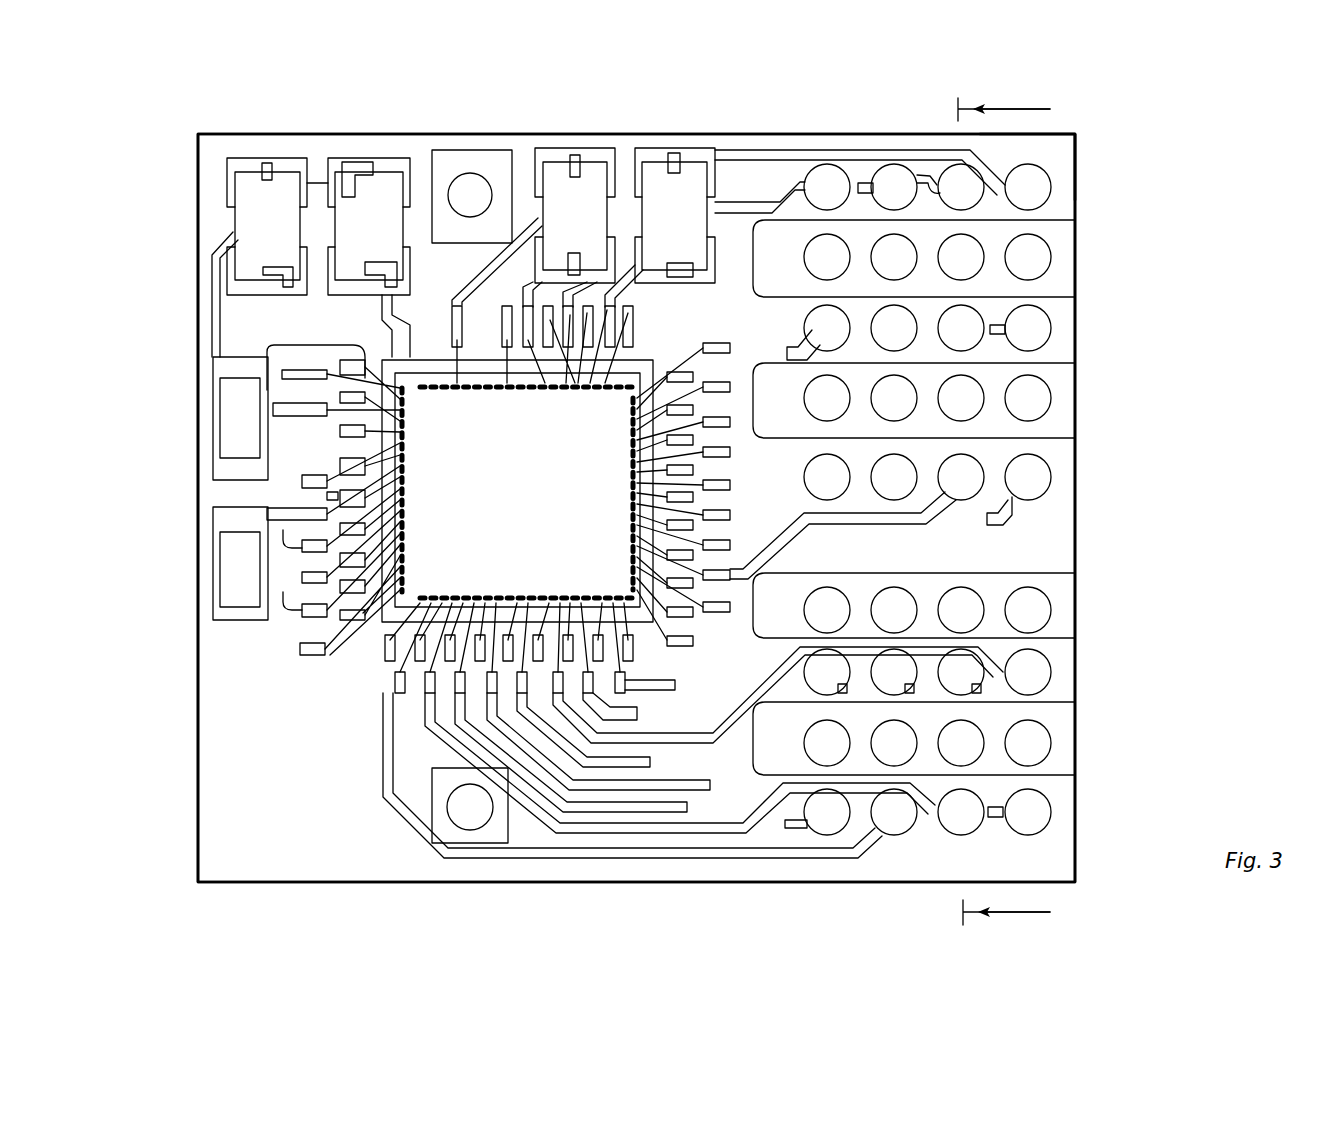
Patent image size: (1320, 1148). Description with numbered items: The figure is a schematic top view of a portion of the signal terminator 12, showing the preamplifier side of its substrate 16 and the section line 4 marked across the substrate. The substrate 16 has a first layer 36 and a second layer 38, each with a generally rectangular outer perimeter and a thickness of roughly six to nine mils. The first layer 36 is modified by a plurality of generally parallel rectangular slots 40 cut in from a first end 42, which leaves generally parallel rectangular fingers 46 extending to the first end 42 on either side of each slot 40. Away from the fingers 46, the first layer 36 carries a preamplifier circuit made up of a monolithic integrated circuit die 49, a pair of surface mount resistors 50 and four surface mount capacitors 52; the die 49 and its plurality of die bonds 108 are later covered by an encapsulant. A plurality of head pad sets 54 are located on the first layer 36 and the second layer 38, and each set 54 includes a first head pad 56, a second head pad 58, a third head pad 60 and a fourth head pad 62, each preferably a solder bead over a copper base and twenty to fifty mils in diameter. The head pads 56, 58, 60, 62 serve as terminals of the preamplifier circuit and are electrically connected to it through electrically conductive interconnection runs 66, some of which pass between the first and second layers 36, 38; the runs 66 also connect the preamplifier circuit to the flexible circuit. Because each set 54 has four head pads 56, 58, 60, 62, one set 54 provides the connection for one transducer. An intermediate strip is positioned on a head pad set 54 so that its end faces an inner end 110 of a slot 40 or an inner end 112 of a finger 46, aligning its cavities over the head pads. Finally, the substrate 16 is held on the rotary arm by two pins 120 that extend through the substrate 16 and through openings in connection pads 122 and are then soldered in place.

The section line 4- 4 is at (1014, 512).
The signal terminator 12 is at (1015, 91).
The substrate 16 is at (772, 102).
The first layer 36 is at (1077, 307).
The second layer 38 is at (1062, 760).
The slots 40 is at (1065, 717).
The first end 42 is at (1077, 140).
The fingers 46 is at (1058, 448).
The monolithic integrated circuit die 49 is at (522, 457).
The surface mount resistors 50 is at (240, 545).
The surface mount capacitors 52 is at (367, 190).
The head pad sets 54 is at (1055, 234).
The first head pad 56 is at (1050, 812).
The second head pad 58 is at (953, 812).
The third head pad 60 is at (892, 817).
The fourth head pad 62 is at (823, 815).
The interconnection runs 66 is at (578, 855).
The die bonds 108 is at (393, 683).
The inner end of slot 110 is at (757, 258).
The inner end of finger 112 is at (748, 180).
The pins 120 is at (466, 175).
The connection pads 122 is at (441, 160).